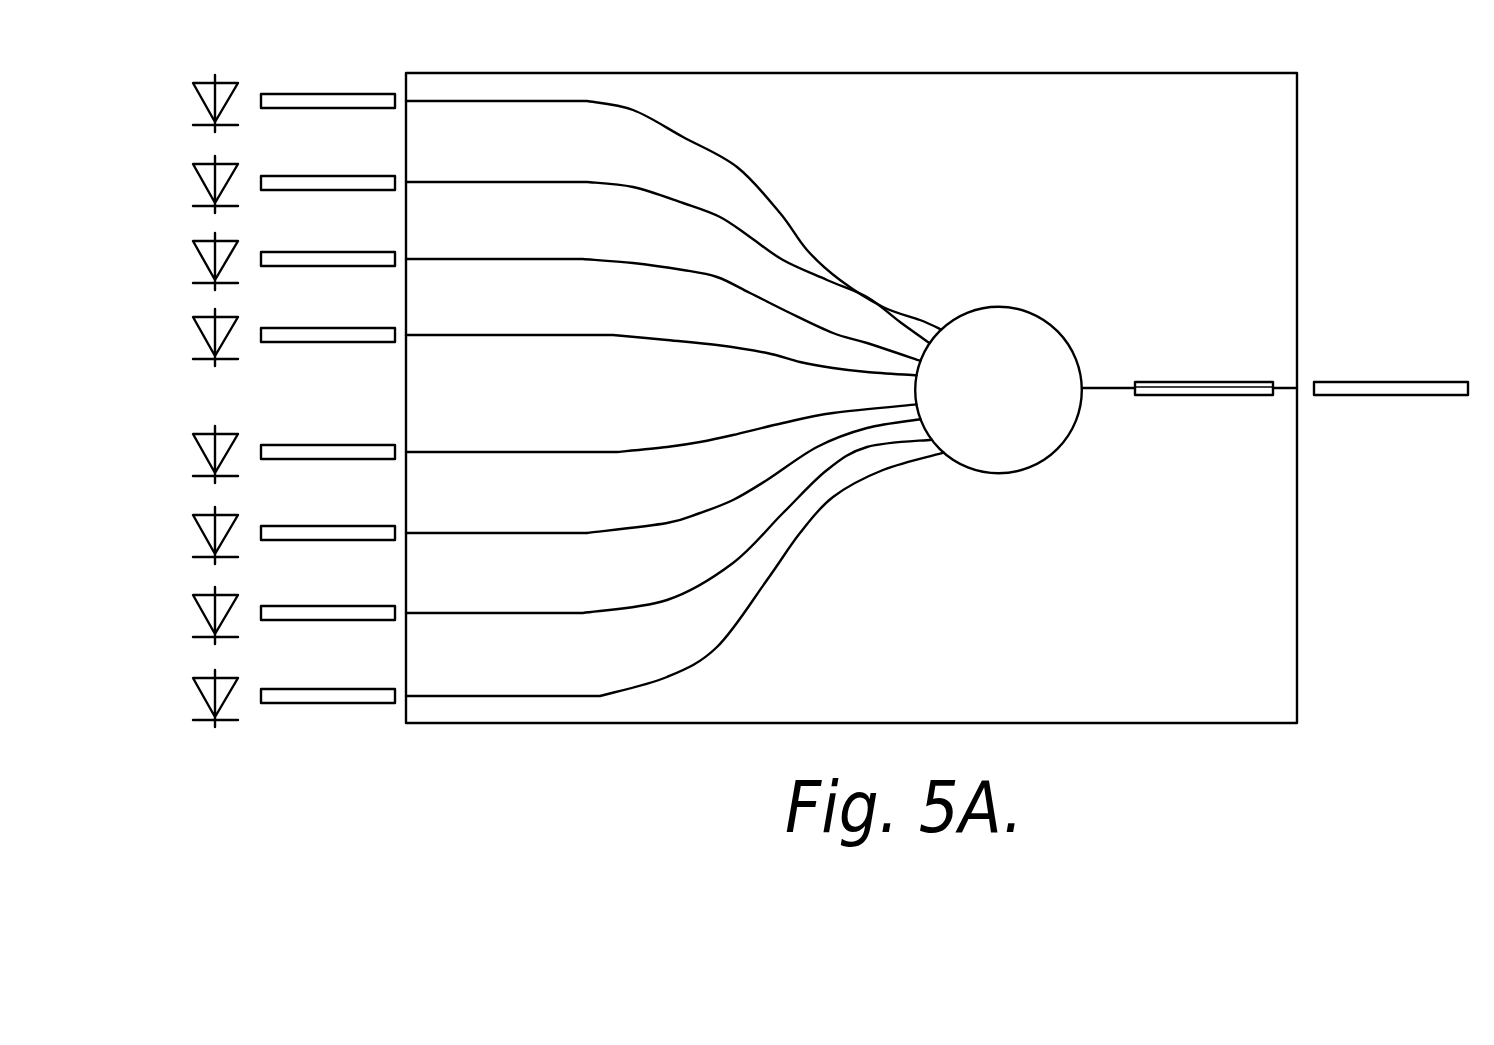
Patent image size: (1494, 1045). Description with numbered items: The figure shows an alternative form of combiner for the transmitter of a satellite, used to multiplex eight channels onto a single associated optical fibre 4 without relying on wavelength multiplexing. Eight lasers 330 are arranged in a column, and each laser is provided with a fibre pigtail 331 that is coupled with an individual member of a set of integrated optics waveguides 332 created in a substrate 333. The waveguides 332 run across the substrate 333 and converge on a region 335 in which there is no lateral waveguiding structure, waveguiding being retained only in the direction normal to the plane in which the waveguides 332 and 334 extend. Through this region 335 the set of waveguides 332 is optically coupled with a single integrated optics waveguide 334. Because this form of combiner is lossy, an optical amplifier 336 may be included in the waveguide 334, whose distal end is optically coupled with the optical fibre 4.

The laser 330 is at (207, 523).
The fibre pigtail 331 is at (340, 335).
The integrated optics waveguide 332 is at (823, 414).
The substrate 333 is at (1056, 98).
The integrated optics waveguide 334 is at (1105, 388).
The region 335 is at (1007, 352).
The optical amplifier 336 is at (1213, 395).
The optical fibre 4 is at (1377, 388).